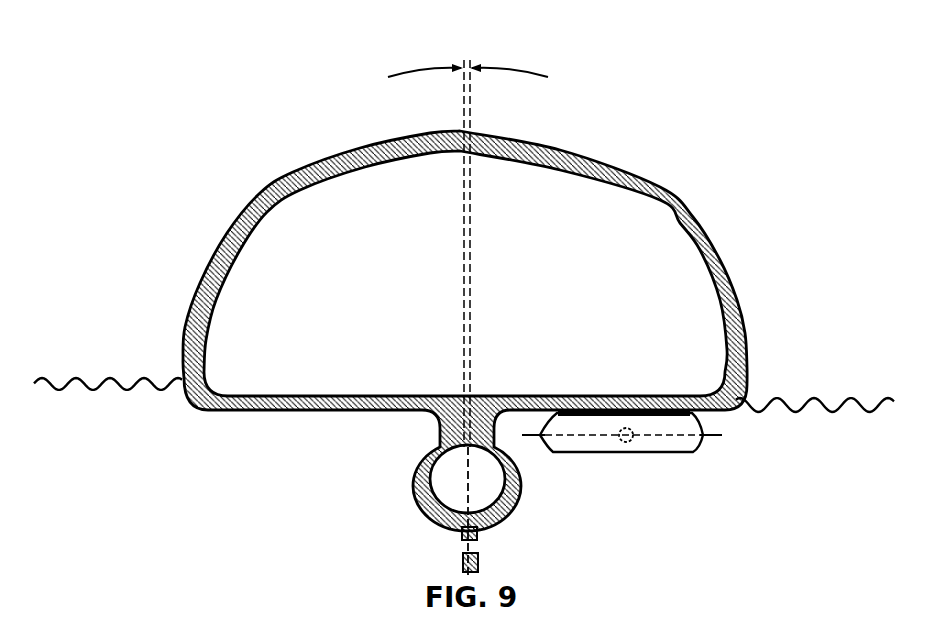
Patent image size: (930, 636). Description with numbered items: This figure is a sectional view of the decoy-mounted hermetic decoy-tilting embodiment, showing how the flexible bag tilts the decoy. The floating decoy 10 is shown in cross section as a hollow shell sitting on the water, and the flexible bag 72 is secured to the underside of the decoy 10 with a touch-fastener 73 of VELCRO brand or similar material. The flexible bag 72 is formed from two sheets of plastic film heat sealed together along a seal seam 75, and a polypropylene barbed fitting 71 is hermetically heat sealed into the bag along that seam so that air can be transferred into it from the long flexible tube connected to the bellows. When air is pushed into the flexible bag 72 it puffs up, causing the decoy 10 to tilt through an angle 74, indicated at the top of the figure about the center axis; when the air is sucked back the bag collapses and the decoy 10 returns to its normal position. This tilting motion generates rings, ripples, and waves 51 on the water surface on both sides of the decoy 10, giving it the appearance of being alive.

The floating decoy 10 is at (618, 170).
The rings, ripples, and waves 51 is at (106, 377).
The barbed fitting 71 is at (627, 442).
The flexible bag 72 is at (693, 452).
The touch-fastener 73 is at (700, 412).
The angle 74 is at (468, 62).
The seal seam 75 is at (592, 433).